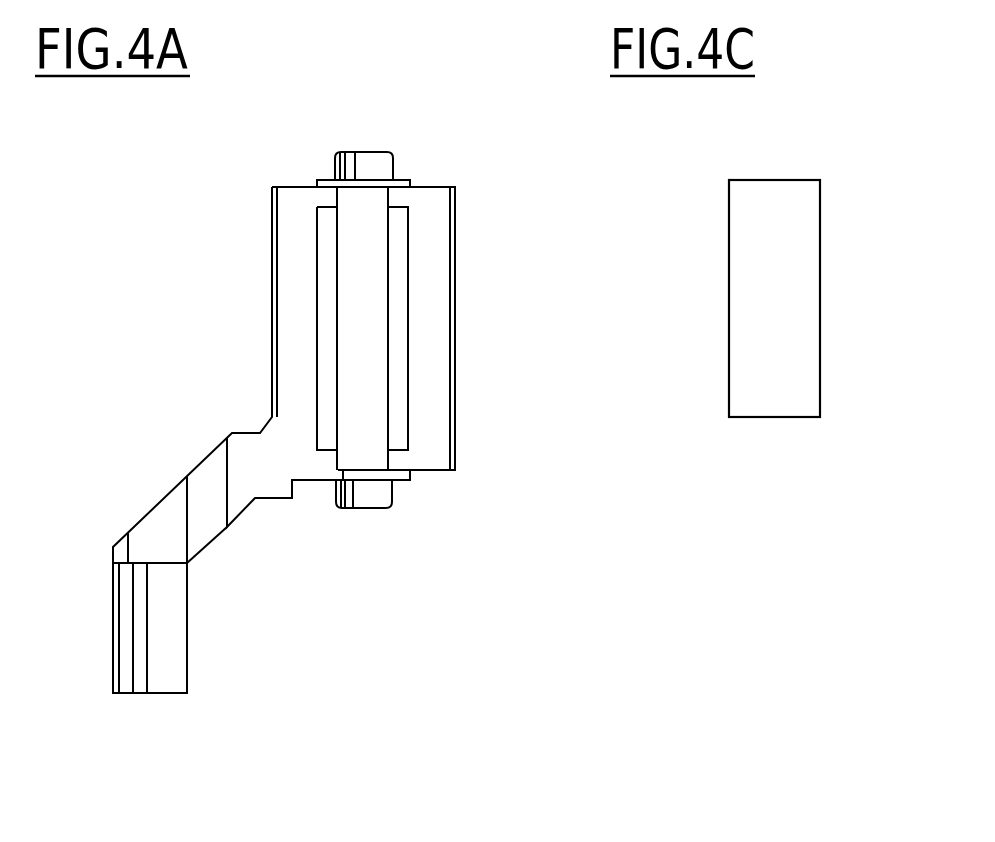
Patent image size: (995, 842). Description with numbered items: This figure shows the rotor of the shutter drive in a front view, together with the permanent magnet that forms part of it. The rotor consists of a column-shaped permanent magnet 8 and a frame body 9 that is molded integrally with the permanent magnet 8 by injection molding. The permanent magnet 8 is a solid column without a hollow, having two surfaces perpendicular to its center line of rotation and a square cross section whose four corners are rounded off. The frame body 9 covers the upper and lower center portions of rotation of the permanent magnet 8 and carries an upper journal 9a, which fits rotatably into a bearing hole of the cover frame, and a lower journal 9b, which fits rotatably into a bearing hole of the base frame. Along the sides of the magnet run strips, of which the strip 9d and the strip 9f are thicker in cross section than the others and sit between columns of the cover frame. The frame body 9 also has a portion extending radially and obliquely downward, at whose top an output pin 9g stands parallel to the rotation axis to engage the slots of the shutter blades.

In FIG. 4A, the permanent magnet 8 is at (398, 295).
In FIG. 4C, the permanent magnet 8 is at (805, 293).
In FIG. 4A, the frame body 9 is at (433, 373).
In FIG. 4A, the journal 9a is at (382, 167).
In FIG. 4A, the journal 9b is at (373, 490).
In FIG. 4A, the strip 9d is at (435, 408).
In FIG. 4A, the strip 9f is at (298, 290).
In FIG. 4A, the output pin 9g is at (163, 627).